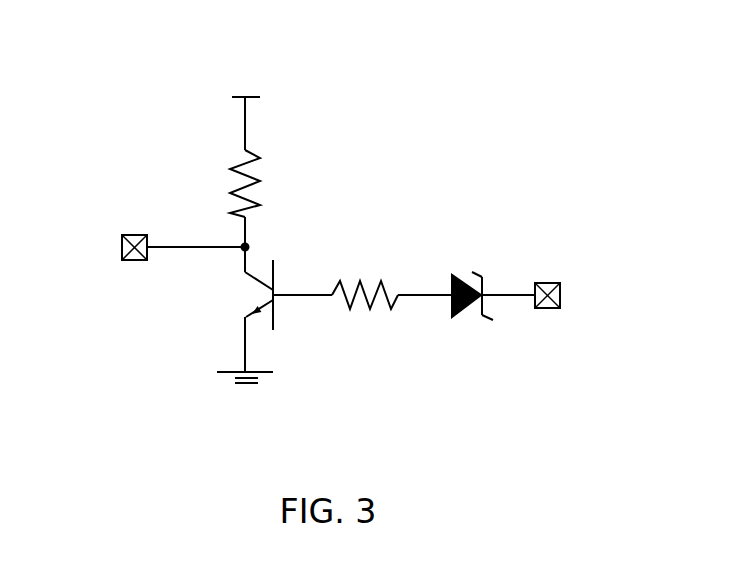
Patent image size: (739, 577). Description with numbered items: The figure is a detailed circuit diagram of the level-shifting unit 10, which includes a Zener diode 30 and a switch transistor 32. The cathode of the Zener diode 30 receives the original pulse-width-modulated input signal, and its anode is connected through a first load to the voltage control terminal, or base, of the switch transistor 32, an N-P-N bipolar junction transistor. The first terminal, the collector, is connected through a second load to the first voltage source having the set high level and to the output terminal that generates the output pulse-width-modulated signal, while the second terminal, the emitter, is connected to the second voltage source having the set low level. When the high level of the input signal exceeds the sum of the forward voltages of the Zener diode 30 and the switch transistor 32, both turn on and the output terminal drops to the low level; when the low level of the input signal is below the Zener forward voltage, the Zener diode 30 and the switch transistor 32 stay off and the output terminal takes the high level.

The level-shifting unit 10 is at (73, 50).
The switch transistor 32 is at (288, 262).
The Zener diode 30 is at (498, 275).